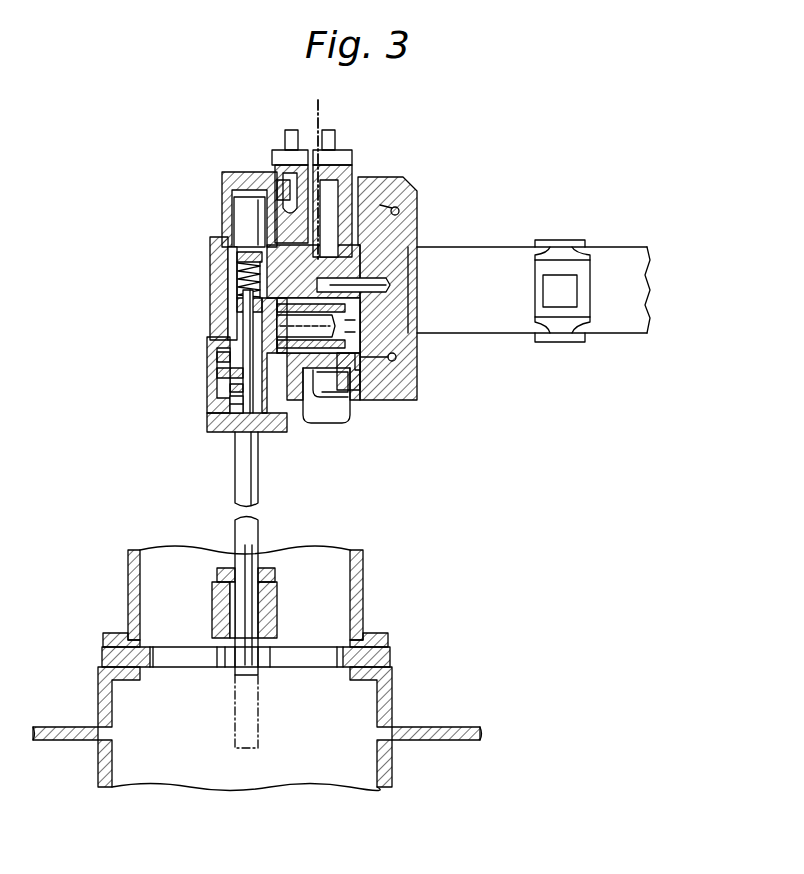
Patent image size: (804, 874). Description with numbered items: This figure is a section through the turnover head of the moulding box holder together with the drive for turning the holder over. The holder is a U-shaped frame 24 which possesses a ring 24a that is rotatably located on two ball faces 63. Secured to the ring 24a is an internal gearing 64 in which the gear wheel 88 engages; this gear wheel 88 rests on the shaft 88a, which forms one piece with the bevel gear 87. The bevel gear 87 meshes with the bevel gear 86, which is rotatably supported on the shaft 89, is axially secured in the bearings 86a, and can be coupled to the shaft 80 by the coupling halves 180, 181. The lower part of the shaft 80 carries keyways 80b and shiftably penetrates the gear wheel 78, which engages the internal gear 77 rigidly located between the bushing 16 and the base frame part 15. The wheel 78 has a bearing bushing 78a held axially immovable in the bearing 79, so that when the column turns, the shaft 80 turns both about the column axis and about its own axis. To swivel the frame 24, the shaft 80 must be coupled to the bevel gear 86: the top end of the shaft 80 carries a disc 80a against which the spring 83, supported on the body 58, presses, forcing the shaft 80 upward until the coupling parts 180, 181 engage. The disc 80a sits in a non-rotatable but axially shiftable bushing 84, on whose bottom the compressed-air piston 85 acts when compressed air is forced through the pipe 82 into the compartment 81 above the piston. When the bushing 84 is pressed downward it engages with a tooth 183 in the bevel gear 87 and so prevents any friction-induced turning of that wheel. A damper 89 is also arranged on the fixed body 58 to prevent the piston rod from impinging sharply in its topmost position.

The base frame part 15 is at (394, 702).
The bushing 16 is at (365, 592).
The U-shaped frame 24 is at (483, 246).
The ring 24a is at (378, 176).
The body 58 is at (347, 272).
The ball faces 63 is at (398, 208).
The internal gearing 64 is at (350, 395).
The internal gear 77 is at (392, 657).
The gear wheel 78 is at (260, 670).
The bearing bushing 78a is at (263, 614).
The bearing 79 is at (280, 598).
The shaft 80 is at (234, 462).
The disc 80a is at (244, 270).
The keyways 80b is at (250, 549).
The compartment 81 is at (246, 192).
The pipe 82 is at (283, 172).
The spring 83 is at (236, 289).
The bushing 84 is at (222, 262).
The compressed-air piston 85 is at (247, 227).
The bevel gear 86 is at (218, 342).
The bearings 86a is at (228, 372).
The bevel gear 87 is at (262, 323).
The gear wheel 88 is at (384, 351).
The shaft 88a is at (312, 376).
The shaft 89 is at (270, 163).
The coupling half 180 is at (232, 402).
The coupling half 181 is at (232, 388).
The tooth 183 is at (258, 312).